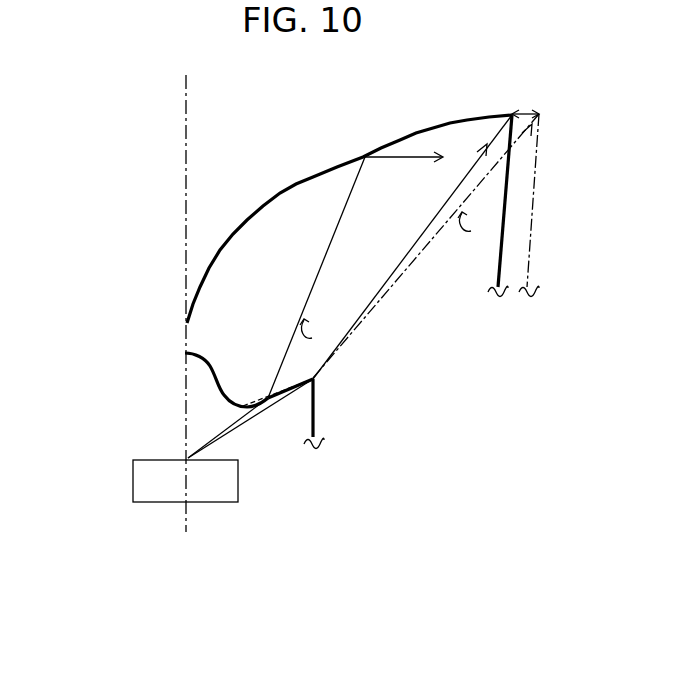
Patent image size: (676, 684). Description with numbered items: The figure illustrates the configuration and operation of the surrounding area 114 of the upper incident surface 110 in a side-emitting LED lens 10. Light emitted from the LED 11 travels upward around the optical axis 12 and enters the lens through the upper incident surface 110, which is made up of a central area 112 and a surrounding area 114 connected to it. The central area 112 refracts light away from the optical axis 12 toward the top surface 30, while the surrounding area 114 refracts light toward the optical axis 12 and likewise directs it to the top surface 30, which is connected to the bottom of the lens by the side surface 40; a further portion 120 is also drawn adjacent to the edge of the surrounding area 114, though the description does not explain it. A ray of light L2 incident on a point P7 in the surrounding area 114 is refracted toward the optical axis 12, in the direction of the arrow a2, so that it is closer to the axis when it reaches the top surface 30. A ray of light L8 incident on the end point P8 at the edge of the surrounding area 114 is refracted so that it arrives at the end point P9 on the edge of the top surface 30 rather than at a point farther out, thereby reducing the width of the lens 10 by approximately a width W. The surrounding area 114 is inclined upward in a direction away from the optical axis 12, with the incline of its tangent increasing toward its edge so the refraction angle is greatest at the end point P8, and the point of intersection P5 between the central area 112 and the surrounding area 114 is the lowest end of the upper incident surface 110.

The side-emitting LED lens 10 is at (56, 112).
The LED 11 is at (223, 485).
The optical axis 12 is at (186, 138).
The top surface 30 is at (340, 163).
The side surface 40 is at (502, 232).
The upper incident surface 110 is at (206, 405).
The central area 112 is at (209, 369).
The surrounding area 114 is at (277, 428).
The shield 120 is at (318, 423).
The point of intersection P5 is at (244, 406).
The present point P7 is at (268, 396).
The end point P8 is at (320, 380).
The end point P9 is at (511, 113).
The ray of light L2 is at (316, 277).
The ray of light L8 is at (412, 247).
The width W is at (525, 106).
The arrow a2 is at (314, 328).